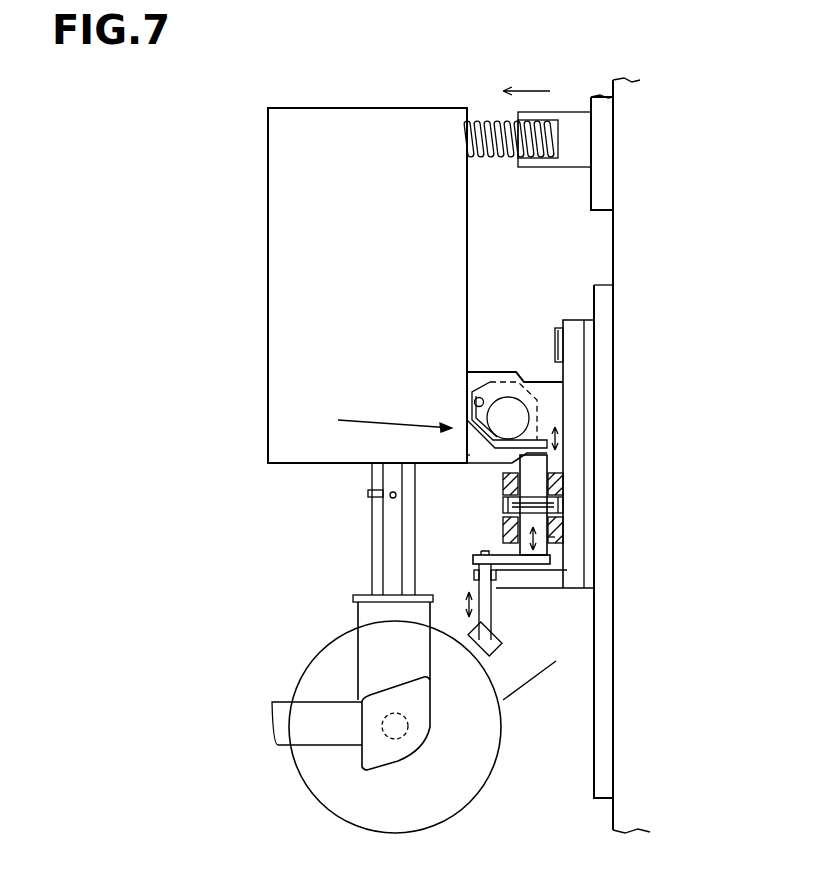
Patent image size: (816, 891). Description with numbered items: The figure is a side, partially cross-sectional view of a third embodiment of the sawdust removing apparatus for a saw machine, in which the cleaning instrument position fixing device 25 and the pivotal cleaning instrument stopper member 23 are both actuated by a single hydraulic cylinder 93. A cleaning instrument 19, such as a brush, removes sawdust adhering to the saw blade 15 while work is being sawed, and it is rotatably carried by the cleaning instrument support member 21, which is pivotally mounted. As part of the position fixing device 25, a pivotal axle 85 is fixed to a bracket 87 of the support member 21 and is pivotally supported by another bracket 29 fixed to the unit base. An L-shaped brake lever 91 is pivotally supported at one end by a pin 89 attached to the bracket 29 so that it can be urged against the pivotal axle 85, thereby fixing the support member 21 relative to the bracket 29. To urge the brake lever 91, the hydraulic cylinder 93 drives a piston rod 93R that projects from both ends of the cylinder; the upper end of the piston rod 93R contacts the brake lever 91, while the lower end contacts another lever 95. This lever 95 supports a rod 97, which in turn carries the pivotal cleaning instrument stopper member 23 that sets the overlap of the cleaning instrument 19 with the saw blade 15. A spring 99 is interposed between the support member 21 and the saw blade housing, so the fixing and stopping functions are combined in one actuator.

The saw blade 15 is at (516, 694).
The cleaning instrument 19 is at (298, 773).
The cleaning instrument support member 21 is at (268, 260).
The pivotal cleaning instrument stopper member 23 is at (482, 645).
The cleaning instrument position fixing device 25 is at (377, 423).
The bracket 29 is at (537, 382).
The pivotal axle 85 is at (507, 404).
The bracket 87 is at (480, 372).
The pin 89 is at (474, 401).
The L-shaped brake lever 91 is at (490, 446).
The hydraulic cylinder 93 is at (565, 490).
The piston rod 93R is at (555, 537).
The lever 95 is at (500, 552).
The rod 97 is at (491, 615).
The spring 99 is at (488, 122).